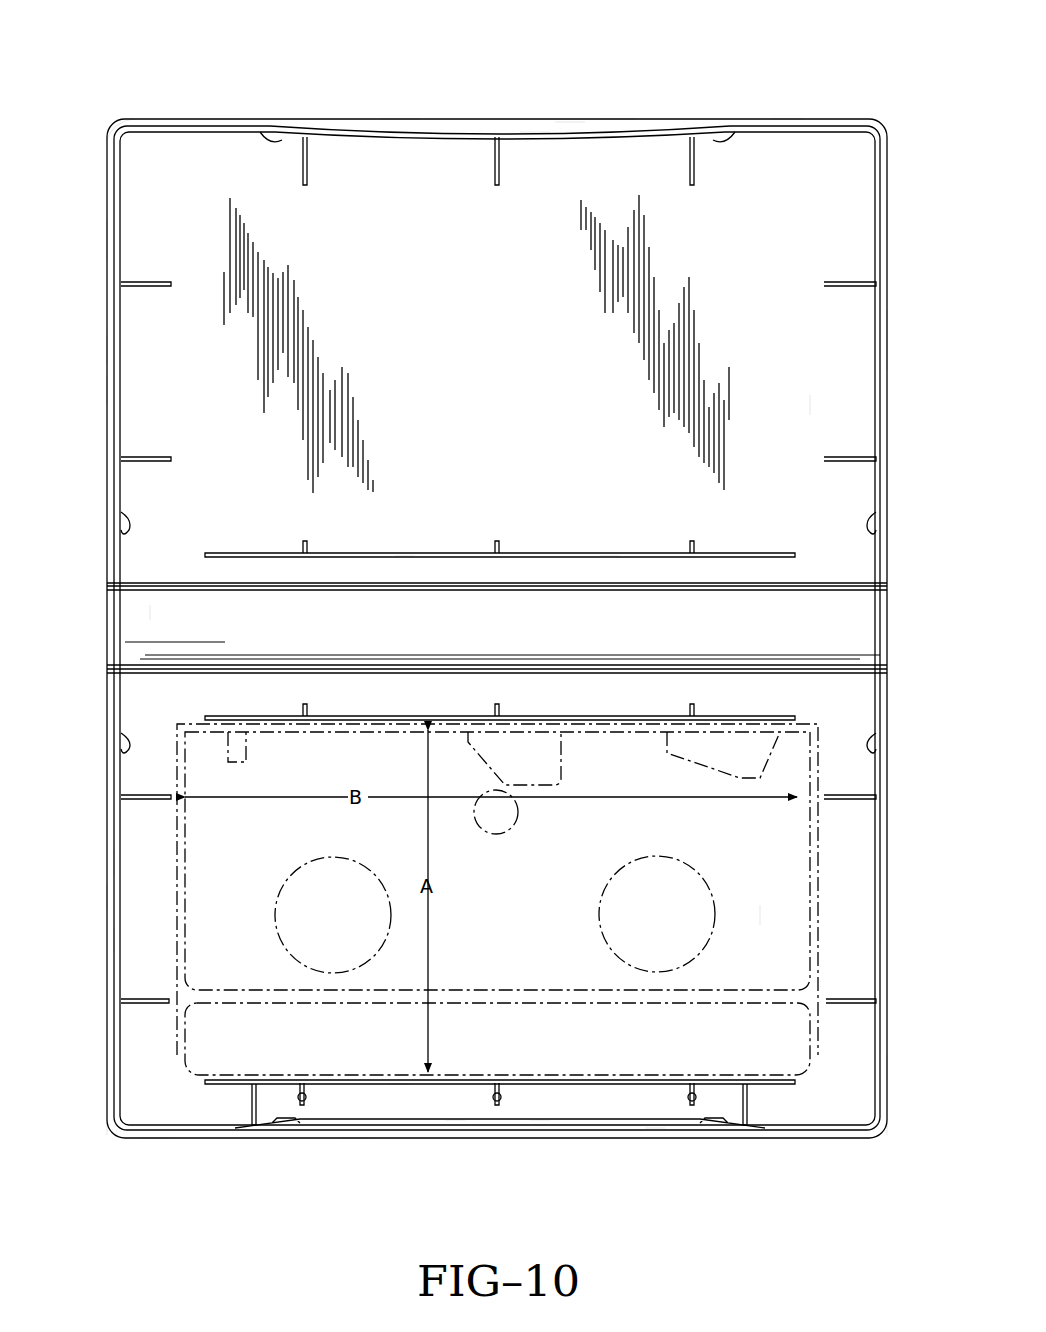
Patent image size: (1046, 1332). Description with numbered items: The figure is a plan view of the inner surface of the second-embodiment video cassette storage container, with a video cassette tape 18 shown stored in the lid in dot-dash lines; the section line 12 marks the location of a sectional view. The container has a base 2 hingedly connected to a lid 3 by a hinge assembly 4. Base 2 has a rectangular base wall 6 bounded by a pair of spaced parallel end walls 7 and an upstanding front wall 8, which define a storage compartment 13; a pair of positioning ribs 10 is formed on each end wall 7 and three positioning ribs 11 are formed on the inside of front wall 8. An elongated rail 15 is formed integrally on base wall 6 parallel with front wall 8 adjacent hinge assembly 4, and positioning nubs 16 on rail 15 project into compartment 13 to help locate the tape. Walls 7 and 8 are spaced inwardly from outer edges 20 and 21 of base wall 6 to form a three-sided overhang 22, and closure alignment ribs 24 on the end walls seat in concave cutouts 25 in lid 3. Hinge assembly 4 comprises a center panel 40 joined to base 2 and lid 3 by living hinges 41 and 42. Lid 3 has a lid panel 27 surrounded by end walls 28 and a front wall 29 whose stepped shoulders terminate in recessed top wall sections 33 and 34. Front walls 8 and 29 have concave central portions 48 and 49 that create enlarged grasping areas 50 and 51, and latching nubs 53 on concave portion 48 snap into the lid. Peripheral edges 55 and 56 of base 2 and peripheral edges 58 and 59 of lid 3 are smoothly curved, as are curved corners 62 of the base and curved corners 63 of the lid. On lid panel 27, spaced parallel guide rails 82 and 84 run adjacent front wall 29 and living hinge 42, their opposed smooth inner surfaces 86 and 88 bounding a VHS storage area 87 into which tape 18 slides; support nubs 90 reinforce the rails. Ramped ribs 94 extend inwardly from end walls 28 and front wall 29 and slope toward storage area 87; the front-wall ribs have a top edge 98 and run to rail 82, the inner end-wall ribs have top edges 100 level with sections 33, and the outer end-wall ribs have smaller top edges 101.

The base 2 is at (143, 116).
The lid 3 is at (350, 1140).
The hinge assembly 4 is at (150, 615).
The base wall 6 is at (498, 372).
The end walls 7 is at (108, 240).
The front wall 8 is at (785, 119).
The positioning ribs 10 is at (150, 284).
The positioning ribs 11 is at (305, 145).
The section line 12 is at (502, 105).
The storage compartment 13 is at (405, 545).
The rail 15 is at (612, 556).
The positioning nubs 16 is at (310, 552).
The video cassette tape 18 is at (810, 405).
The outer edge 20 is at (108, 389).
The outer edge 21 is at (617, 120).
The overhang 22 is at (218, 118).
The closure alignment ribs 24 is at (125, 520).
The concave cutouts 25 is at (126, 745).
The lid panel 27 is at (509, 902).
The end walls 28 is at (108, 899).
The front wall 29 is at (195, 1129).
The top wall sections 33 is at (114, 864).
The top wall section 34 is at (155, 1136).
The center panel 40 is at (468, 556).
The living hinge 41 is at (262, 592).
The living hinge 42 is at (152, 674).
The concave central portion 48 is at (537, 134).
The concave central portion 49 is at (455, 1122).
The grasping area 50 is at (573, 124).
The grasping area 51 is at (542, 1122).
The latching nubs 53 is at (272, 134).
The peripheral edges 55 is at (108, 351).
The peripheral edge 56 is at (400, 120).
The peripheral edges 58 is at (114, 941).
The peripheral edge 59 is at (655, 1126).
The curved corners 62 is at (116, 128).
The curved corners 63 is at (114, 1131).
The guide rail 82 is at (400, 1085).
The guide rail 84 is at (568, 718).
The smooth inner surface 86 is at (590, 1080).
The VHS storage area 87 is at (772, 918).
The smooth inner surface 88 is at (598, 725).
The support nubs 90 is at (302, 712).
The ramped ribs 94 is at (148, 803).
The top edge 98 is at (252, 1115).
The top edges 100 is at (150, 797).
The top edges 101 is at (148, 1001).